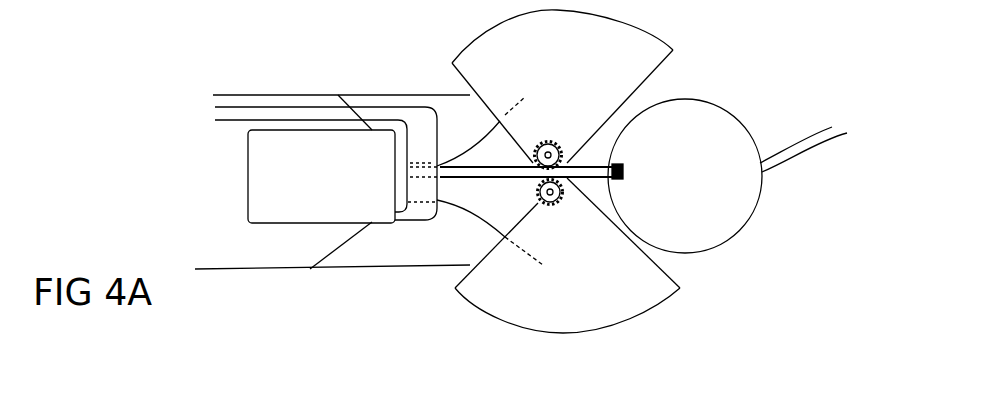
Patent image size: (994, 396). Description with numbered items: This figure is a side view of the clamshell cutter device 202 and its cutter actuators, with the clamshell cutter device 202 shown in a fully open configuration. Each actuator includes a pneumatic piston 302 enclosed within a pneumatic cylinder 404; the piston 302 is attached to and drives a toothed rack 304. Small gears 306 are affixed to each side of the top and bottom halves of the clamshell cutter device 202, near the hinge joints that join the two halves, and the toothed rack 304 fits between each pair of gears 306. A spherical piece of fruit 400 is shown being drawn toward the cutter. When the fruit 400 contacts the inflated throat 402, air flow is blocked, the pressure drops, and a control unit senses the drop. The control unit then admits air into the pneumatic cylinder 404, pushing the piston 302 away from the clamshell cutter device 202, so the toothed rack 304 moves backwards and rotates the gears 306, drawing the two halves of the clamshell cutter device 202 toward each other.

The clamshell cutter device 202 is at (660, 303).
The pneumatic piston 302 is at (473, 178).
The toothed rack 304 is at (592, 163).
The small gear 306 is at (550, 137).
The spherical piece of fruit 400 is at (745, 213).
The inflated throat 402 is at (395, 255).
The pneumatic cylinder 404 is at (247, 183).